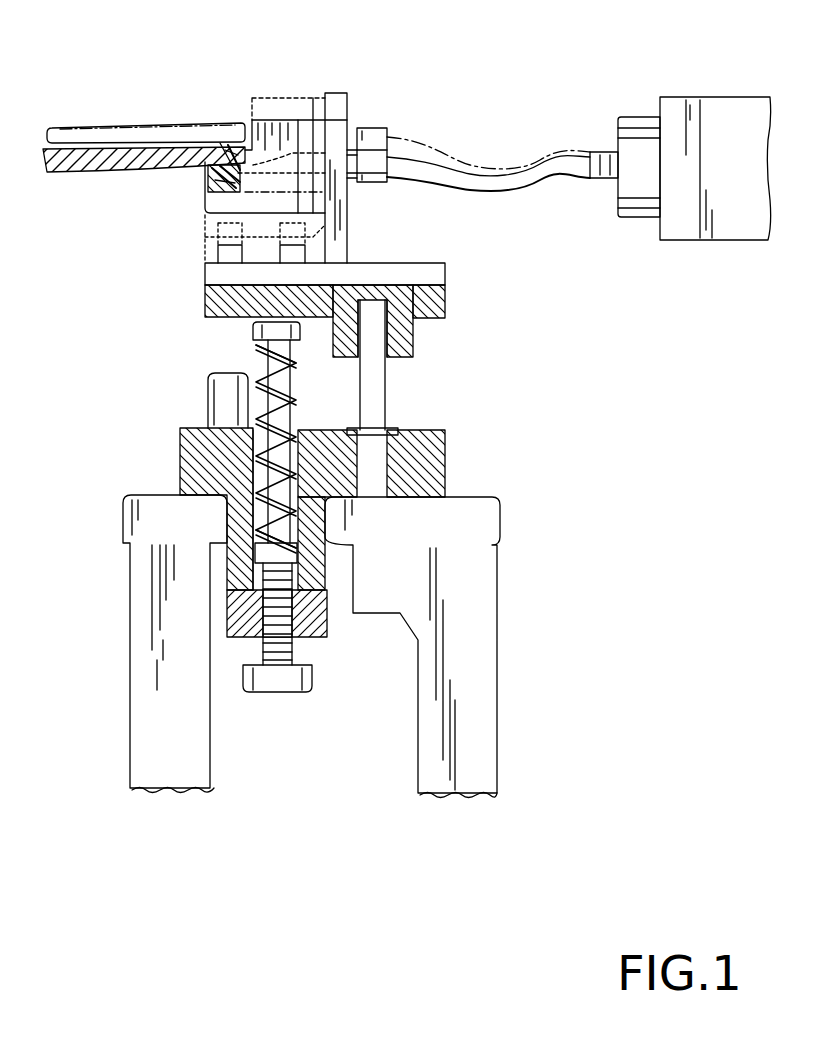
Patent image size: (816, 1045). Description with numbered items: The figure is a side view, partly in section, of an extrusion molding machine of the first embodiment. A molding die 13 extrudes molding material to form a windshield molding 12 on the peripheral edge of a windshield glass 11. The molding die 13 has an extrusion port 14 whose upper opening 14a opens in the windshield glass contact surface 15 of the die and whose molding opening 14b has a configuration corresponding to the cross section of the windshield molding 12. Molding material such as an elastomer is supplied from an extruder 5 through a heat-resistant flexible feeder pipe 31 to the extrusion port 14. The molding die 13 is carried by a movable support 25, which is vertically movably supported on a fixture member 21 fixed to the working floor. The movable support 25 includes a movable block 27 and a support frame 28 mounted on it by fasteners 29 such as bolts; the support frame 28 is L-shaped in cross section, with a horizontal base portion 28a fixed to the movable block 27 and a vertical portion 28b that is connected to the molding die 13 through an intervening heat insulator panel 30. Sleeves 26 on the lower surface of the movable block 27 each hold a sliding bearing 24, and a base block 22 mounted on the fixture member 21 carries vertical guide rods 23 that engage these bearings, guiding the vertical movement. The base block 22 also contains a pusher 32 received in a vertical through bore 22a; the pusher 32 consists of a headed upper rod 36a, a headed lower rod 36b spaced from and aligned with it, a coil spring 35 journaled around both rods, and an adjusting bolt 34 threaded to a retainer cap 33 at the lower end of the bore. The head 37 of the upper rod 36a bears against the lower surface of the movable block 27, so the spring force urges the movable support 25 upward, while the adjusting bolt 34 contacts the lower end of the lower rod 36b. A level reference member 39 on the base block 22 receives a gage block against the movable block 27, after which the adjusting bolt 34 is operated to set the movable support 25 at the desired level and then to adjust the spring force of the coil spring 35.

The extruder 5 is at (718, 95).
The windshield glass 11 is at (112, 126).
The windshield molding 12 is at (205, 176).
The molding die 13 is at (273, 127).
The extrusion port 14 is at (236, 160).
The upper opening 14a is at (228, 165).
The molding opening 14b is at (208, 200).
The windshield glass contact surface 15 is at (225, 160).
The fixture member 21 is at (497, 590).
The base block 22 is at (425, 458).
The vertical through bore 22a is at (232, 560).
The vertical guide rod 23 is at (375, 408).
The sliding bearing 24 is at (393, 358).
The movable support 25 is at (202, 303).
The sleeve 26 is at (414, 337).
The movable block 27 is at (447, 306).
The support frame 28 is at (345, 220).
The horizontal base portion 28a is at (222, 275).
The vertical portion 28b is at (345, 103).
The fasteners 29 is at (292, 252).
The heat insulator panel 30 is at (313, 108).
The flexible feeder pipe 31 is at (547, 163).
The pusher 32 is at (248, 350).
The retainer cap 33 is at (238, 612).
The adjusting bolt 34 is at (293, 648).
The coil spring 35 is at (245, 432).
The headed upper rod 36a is at (291, 377).
The headed lower rod 36b is at (325, 568).
The head 37 is at (250, 333).
The level reference member 39 is at (230, 400).